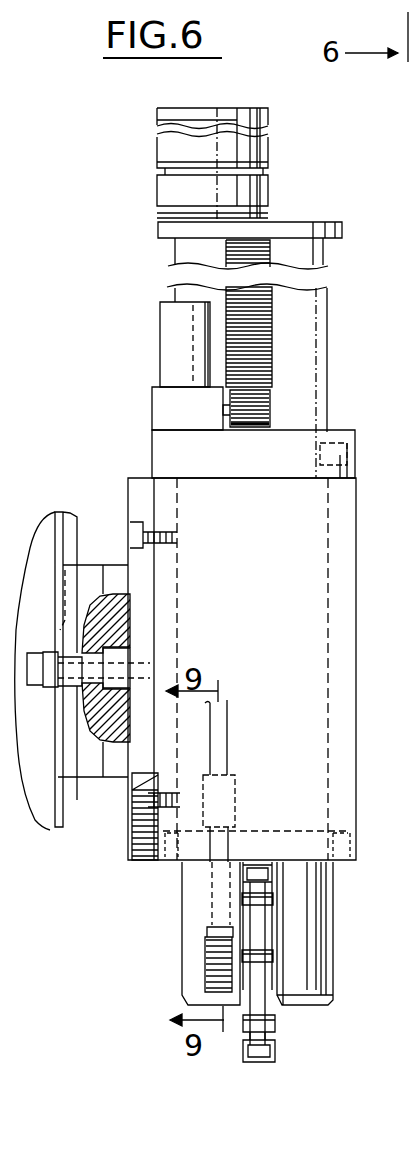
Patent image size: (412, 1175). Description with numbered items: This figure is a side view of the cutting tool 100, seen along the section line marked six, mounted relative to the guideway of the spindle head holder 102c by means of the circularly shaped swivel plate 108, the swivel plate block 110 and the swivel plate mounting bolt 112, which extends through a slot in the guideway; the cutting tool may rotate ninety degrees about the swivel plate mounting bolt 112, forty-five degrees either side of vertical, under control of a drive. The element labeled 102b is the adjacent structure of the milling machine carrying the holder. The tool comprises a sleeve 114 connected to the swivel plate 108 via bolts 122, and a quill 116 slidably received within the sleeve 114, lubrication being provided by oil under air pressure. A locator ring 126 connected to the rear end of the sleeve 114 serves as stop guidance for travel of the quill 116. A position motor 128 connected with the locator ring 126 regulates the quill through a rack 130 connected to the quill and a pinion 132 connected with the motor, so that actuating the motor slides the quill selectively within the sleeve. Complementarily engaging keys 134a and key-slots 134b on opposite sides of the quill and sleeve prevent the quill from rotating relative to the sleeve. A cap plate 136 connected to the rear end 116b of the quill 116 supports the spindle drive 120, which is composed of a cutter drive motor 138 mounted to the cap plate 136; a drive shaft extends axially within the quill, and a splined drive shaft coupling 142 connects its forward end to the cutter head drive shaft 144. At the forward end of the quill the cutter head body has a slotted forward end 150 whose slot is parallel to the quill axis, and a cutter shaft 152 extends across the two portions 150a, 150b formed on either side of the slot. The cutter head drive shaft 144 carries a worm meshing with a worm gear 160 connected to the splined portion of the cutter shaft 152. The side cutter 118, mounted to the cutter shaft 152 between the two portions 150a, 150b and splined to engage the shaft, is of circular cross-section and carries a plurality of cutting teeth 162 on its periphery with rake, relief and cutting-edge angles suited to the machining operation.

The cutting tool 100 is at (110, 306).
The curved flange plate 102b is at (48, 832).
The spindle head holder 102c is at (116, 816).
The swivel plate 108 is at (148, 446).
The swivel plate block 110 is at (110, 612).
The swivel plate mounting bolt 112 is at (69, 512).
The sleeve 114 is at (356, 526).
The quill 116 is at (328, 340).
The rear end of the quill 116b is at (322, 222).
The side cutter 118 is at (272, 1010).
The spindle drive 120 is at (138, 150).
The bolts 122 is at (128, 534).
The locator ring 126 is at (346, 442).
The position motor 128 is at (160, 322).
The rack 130 is at (272, 342).
The pinion 132 is at (271, 396).
The keys 134a is at (333, 438).
The key-slots 134b is at (168, 288).
The cap plate 136 is at (158, 232).
The cutter drive motor 138 is at (268, 150).
The splined drive shaft coupling 142 is at (236, 786).
The cutter head drive shaft 144 is at (210, 874).
The slotted forward end 150 is at (160, 988).
The first portion of the forward end 150a is at (334, 926).
The second portion of the forward end 150b is at (180, 906).
The cutter shaft 152 is at (276, 978).
The worm gear 160 is at (206, 950).
The cutting teeth 162 is at (276, 1050).